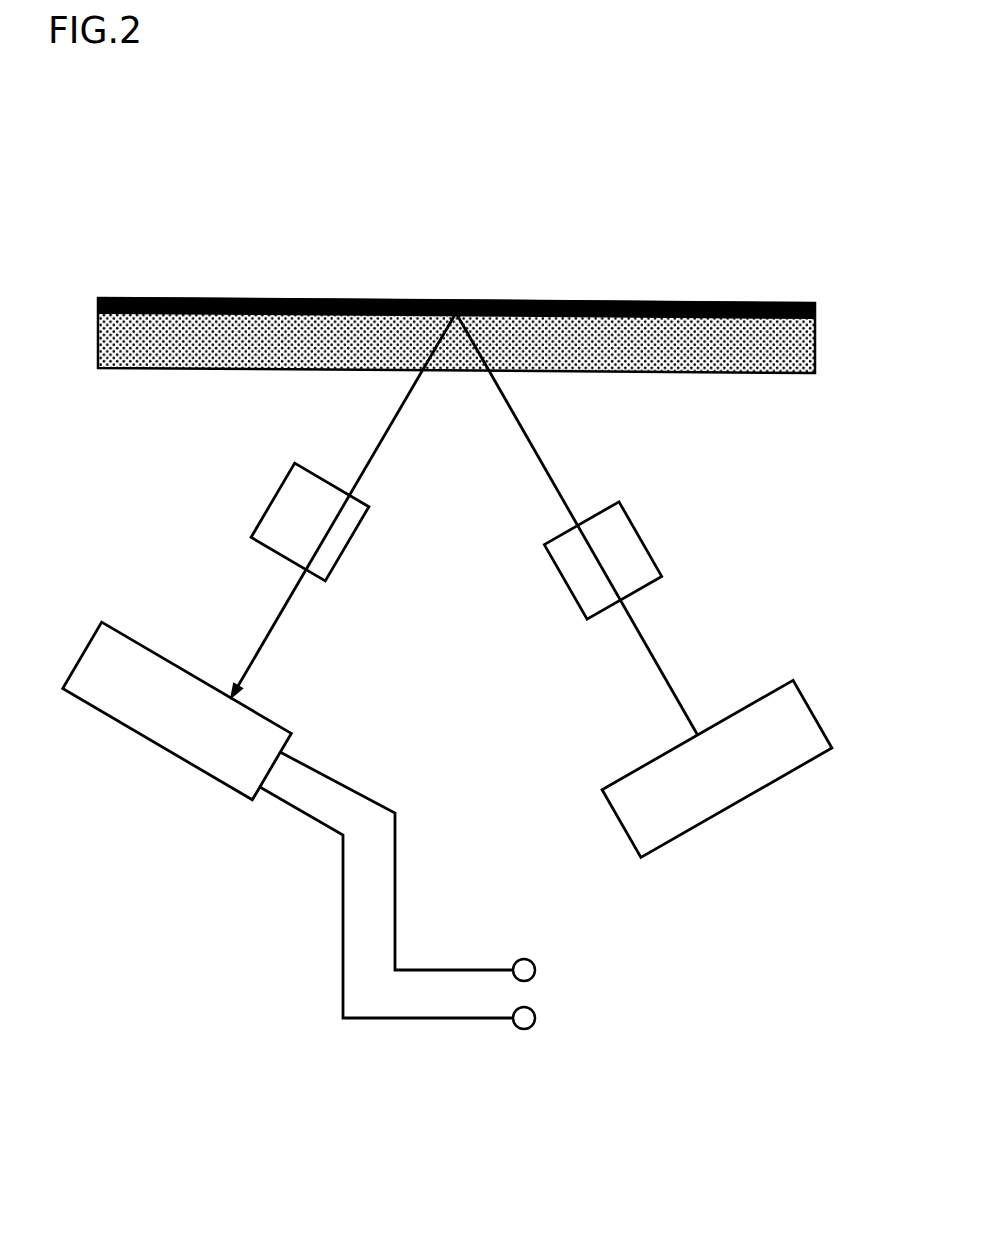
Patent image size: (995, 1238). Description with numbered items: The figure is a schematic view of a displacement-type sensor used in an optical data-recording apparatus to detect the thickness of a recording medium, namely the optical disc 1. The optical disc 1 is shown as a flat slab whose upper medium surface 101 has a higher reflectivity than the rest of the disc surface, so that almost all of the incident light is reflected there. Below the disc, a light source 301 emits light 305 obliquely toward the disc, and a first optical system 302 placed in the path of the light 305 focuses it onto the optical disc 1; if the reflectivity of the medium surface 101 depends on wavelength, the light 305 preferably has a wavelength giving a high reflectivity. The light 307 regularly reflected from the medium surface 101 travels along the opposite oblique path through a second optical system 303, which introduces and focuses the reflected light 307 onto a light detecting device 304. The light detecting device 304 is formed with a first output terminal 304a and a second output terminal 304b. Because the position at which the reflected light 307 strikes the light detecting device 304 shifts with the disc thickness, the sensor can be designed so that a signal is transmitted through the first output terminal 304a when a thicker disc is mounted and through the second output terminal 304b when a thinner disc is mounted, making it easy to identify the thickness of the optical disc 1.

The optical disc 1 is at (825, 303).
The medium surface 101 is at (656, 303).
The light source 301 is at (807, 702).
The first optical system 302 is at (643, 538).
The second optical system 303 is at (262, 510).
The light detecting device 304 is at (160, 743).
The first output terminal 304a is at (446, 871).
The second output terminal 304b is at (436, 913).
The light 305 is at (650, 649).
The reflected light 307 is at (388, 435).